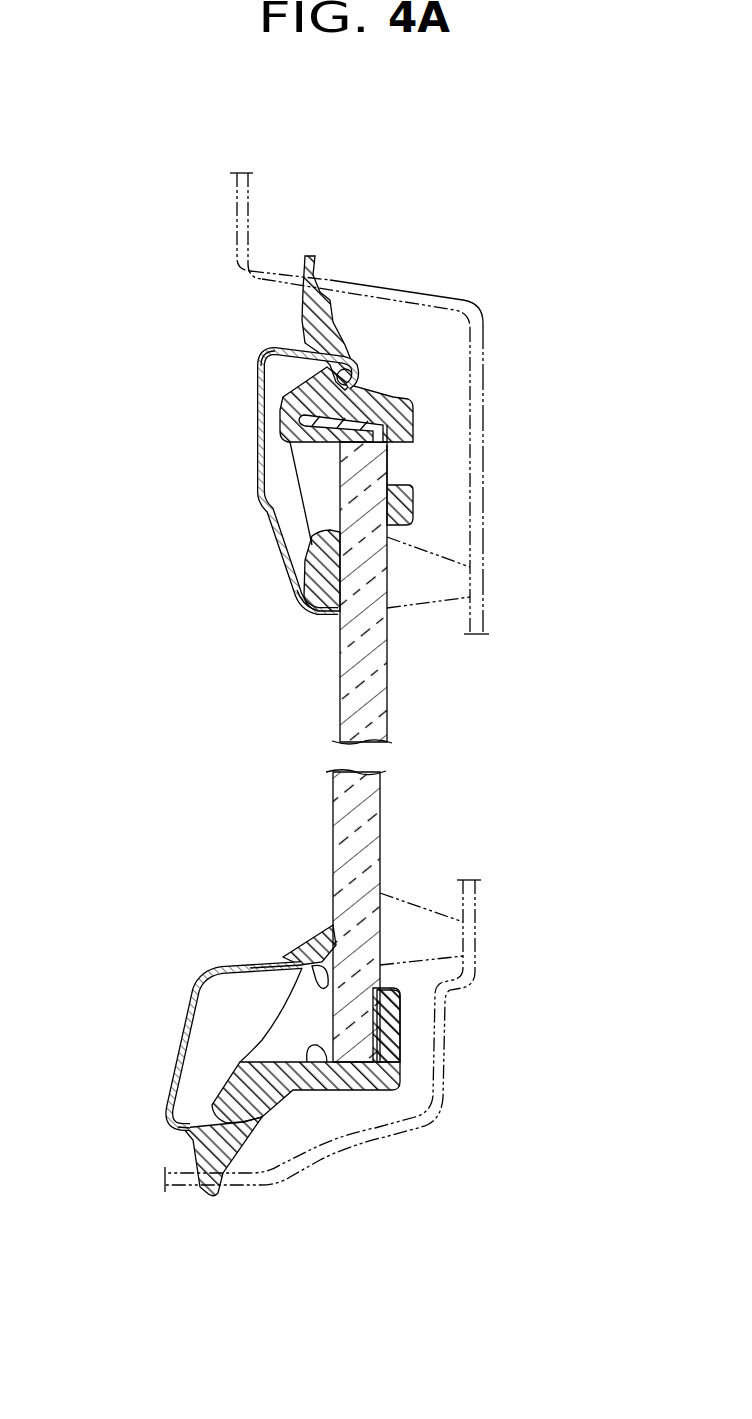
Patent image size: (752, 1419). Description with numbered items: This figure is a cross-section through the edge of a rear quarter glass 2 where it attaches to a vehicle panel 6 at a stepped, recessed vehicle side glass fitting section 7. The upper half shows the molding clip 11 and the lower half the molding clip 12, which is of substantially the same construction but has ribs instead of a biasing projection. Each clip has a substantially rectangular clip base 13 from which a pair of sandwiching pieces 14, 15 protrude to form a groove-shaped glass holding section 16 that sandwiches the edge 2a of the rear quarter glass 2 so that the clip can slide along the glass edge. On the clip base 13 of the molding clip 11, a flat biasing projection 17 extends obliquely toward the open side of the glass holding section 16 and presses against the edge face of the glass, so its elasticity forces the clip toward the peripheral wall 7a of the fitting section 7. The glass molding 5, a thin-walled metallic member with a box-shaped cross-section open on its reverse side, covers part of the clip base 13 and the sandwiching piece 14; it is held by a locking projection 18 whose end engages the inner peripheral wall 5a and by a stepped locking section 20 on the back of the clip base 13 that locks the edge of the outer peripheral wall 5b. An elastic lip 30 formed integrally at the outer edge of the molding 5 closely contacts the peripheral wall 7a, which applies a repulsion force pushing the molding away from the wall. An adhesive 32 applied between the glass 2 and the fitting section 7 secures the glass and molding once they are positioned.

The rear quarter glass 2 is at (400, 714).
The edge of the rear quarter glass 2a is at (367, 460).
The glass molding 5 is at (245, 359).
The inner peripheral wall of the glass molding 5a is at (300, 588).
The outer peripheral wall of the glass molding 5b is at (262, 357).
The vehicle panel 6 is at (237, 202).
The vehicle side glass fitting section 7 is at (465, 398).
The peripheral wall 7a is at (405, 307).
The molding clip 11 is at (427, 390).
The molding clip 12 is at (383, 1110).
The clip base 13 is at (396, 396).
The sandwiching piece 14 is at (280, 1021).
The sandwiching piece 15 is at (400, 506).
The glass holding section 16 is at (388, 447).
The biasing projection 17 is at (330, 428).
The locking projection 18 is at (318, 555).
The locking section 20 is at (355, 370).
The elastic lip 30 is at (310, 256).
The adhesive 32 is at (405, 608).